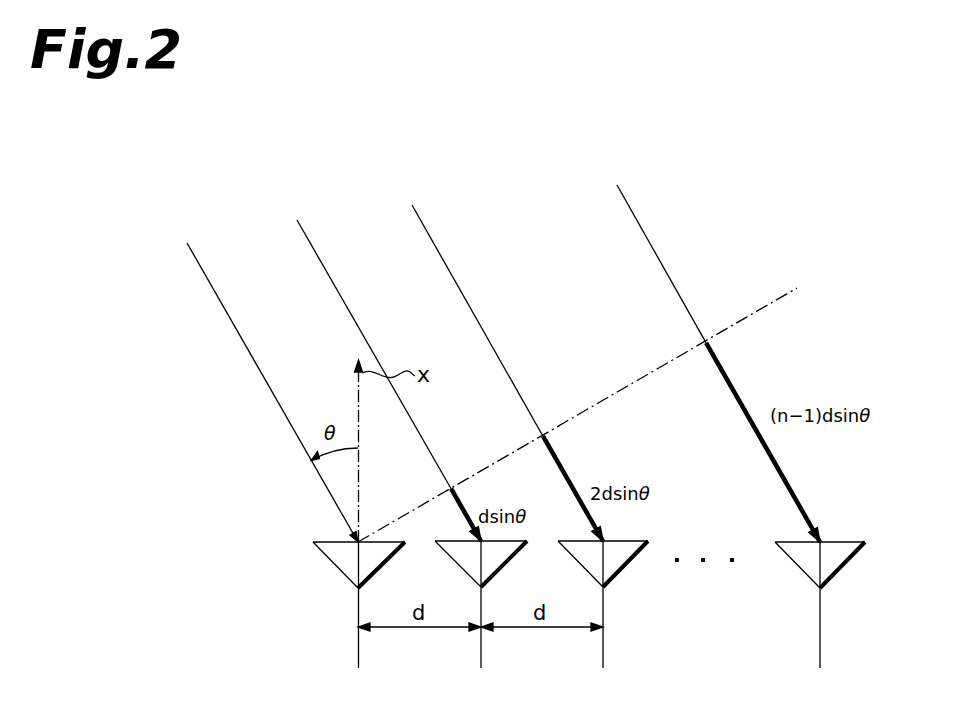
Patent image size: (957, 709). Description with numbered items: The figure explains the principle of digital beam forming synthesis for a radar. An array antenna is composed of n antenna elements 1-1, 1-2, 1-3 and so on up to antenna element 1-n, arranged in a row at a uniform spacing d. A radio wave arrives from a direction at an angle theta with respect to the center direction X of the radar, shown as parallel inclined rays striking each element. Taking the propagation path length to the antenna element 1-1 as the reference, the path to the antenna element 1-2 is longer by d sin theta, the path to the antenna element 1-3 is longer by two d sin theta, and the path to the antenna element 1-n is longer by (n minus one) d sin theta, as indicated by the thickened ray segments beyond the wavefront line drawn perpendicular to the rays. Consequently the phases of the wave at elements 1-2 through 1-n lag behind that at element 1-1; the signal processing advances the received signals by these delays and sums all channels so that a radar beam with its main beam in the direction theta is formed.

The antenna element 1-1 is at (334, 567).
The antenna element 1-2 is at (456, 561).
The antenna element 1-3 is at (579, 561).
The antenna element 1-n is at (802, 566).